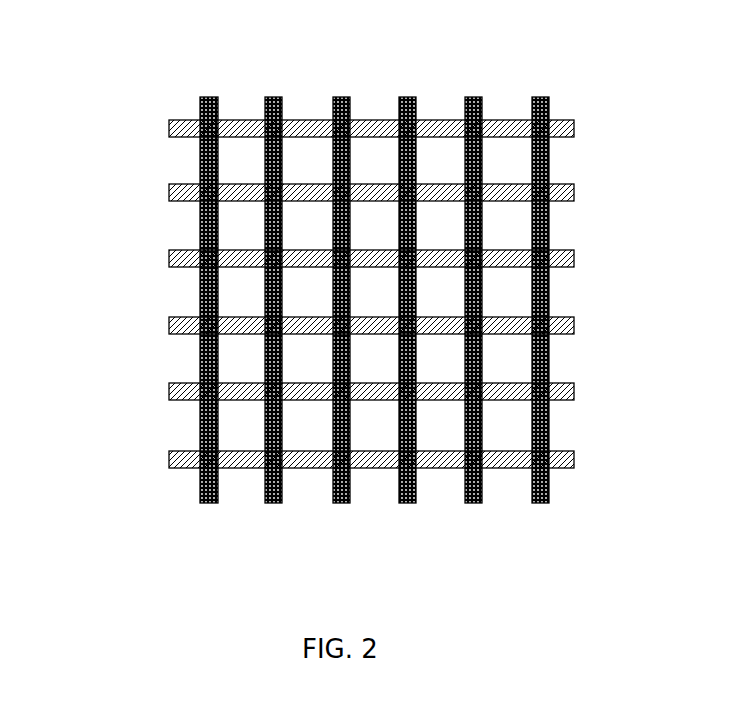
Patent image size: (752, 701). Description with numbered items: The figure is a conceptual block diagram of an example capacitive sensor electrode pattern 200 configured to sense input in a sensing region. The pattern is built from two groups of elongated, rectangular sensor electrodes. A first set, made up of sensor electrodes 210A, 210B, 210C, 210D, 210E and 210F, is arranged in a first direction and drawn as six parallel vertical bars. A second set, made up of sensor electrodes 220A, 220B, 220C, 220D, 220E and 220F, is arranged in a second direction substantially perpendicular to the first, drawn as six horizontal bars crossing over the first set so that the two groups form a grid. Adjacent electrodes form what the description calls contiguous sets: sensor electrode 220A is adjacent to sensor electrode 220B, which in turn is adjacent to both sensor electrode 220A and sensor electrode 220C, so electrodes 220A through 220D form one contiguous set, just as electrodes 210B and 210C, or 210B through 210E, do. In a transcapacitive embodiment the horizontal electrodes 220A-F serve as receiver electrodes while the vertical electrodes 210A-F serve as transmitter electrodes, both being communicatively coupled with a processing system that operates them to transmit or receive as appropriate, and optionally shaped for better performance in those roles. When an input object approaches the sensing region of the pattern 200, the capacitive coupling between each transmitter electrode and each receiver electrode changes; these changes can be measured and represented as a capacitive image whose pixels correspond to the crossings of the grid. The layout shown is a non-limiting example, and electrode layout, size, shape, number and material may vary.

The capacitive sensor electrode pattern 200 is at (96, 64).
The sensor electrode 210A is at (209, 504).
The sensor electrode 210B is at (274, 504).
The sensor electrode 210C is at (342, 504).
The sensor electrode 210D is at (408, 504).
The sensor electrode 210E is at (474, 504).
The sensor electrode 210F is at (540, 504).
The sensor electrode 220A is at (169, 128).
The sensor electrode 220B is at (169, 192).
The sensor electrode 220C is at (169, 258).
The sensor electrode 220D is at (169, 325).
The sensor electrode 220E is at (169, 391).
The sensor electrode 220F is at (169, 459).